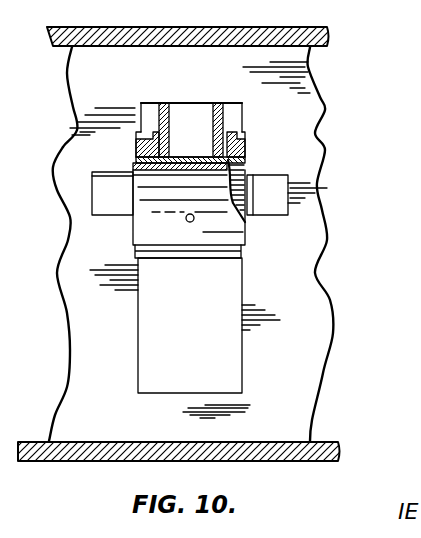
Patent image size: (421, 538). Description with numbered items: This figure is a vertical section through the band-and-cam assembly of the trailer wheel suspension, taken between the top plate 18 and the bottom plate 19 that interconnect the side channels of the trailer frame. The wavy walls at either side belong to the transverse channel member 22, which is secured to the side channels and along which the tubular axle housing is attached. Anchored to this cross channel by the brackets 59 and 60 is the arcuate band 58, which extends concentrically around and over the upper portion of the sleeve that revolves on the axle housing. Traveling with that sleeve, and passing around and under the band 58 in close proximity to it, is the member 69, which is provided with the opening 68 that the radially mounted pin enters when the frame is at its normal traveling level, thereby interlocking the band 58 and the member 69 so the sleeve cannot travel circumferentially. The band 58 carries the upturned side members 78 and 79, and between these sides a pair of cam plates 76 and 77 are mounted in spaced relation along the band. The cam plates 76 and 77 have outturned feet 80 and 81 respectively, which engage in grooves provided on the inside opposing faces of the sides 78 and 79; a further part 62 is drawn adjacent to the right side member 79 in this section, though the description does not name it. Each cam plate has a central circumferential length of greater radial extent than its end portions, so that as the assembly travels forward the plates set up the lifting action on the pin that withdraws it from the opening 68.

The top plate 18 is at (325, 36).
The bottom plate 19 is at (289, 452).
The transverse channel member 22 is at (305, 120).
The arcuate band 58 is at (175, 157).
The bracket 59 is at (270, 205).
The bracket 60 is at (102, 202).
The retaining ring 62 is at (234, 133).
The opening 68 is at (189, 222).
The member 69 is at (142, 223).
The cam plate 76 is at (225, 128).
The cam plate 77 is at (165, 103).
The upturned side member 78 is at (141, 137).
The upturned side member 79 is at (245, 142).
The outturned foot 80 is at (140, 148).
The outturned foot 81 is at (240, 157).